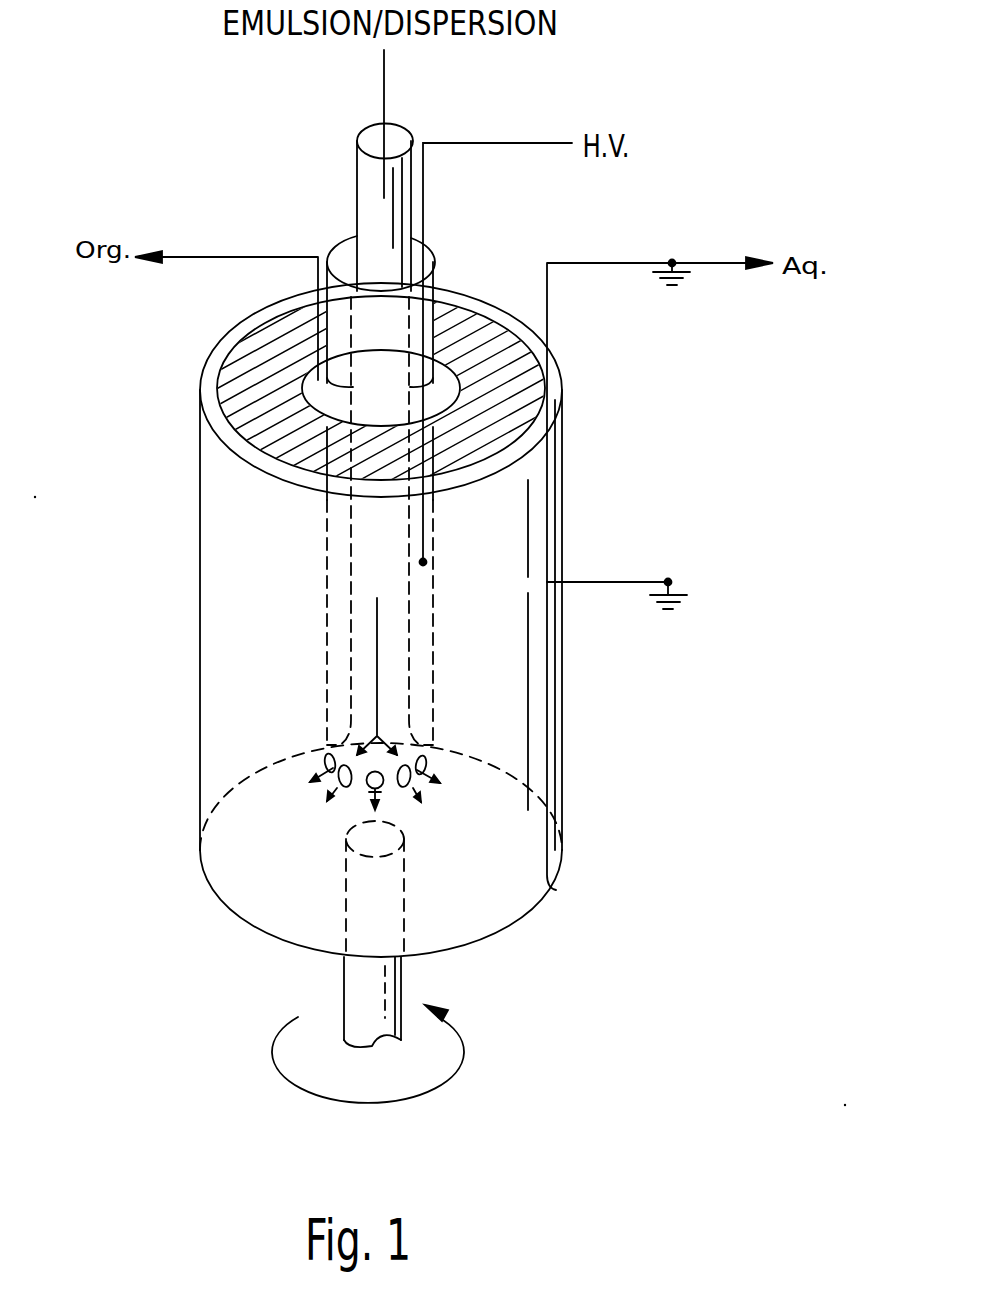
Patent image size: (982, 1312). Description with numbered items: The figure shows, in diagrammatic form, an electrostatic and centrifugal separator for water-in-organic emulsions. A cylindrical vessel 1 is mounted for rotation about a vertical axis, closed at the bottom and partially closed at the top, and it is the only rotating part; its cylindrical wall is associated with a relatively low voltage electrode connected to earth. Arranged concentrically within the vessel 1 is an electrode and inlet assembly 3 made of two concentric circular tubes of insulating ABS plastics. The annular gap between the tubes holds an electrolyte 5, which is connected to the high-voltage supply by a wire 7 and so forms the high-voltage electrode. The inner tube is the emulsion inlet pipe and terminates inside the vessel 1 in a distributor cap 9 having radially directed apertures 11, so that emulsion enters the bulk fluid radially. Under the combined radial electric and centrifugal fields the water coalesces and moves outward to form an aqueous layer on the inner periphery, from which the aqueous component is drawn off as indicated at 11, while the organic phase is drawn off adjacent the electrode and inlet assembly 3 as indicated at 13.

The cylindrical vessel 1 is at (525, 715).
The electrode and inlet assembly 3 is at (448, 583).
The electrolyte 5 is at (417, 665).
The wire 7 is at (478, 143).
The distributor cap 9 is at (413, 782).
The radially directed apertures 11 is at (635, 262).
The organic phase draw-off 13 is at (273, 257).